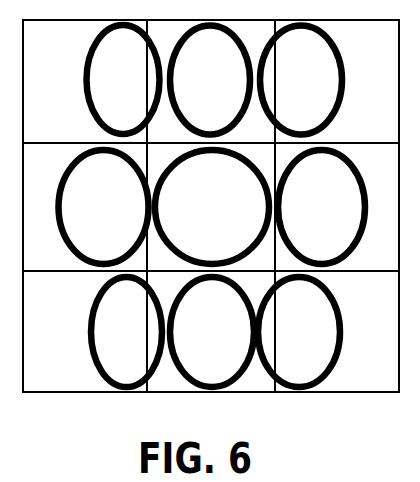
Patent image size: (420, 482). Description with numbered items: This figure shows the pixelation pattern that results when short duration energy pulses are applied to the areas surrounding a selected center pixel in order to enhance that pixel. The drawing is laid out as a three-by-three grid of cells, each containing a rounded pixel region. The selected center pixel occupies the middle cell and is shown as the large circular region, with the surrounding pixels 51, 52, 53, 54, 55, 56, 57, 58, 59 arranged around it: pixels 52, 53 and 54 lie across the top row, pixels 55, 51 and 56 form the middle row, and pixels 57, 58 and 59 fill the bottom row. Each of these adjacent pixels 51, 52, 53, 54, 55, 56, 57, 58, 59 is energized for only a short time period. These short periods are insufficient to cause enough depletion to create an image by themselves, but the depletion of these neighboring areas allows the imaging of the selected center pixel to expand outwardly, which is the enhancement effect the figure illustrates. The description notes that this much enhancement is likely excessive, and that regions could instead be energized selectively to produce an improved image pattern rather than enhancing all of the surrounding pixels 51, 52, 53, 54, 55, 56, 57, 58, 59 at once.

The pixel 51 is at (212, 207).
The pixel 52 is at (123, 79).
The pixel 53 is at (210, 80).
The pixel 54 is at (301, 80).
The pixel 55 is at (104, 207).
The pixel 56 is at (321, 207).
The pixel 57 is at (126, 332).
The pixel 58 is at (212, 332).
The pixel 59 is at (299, 332).